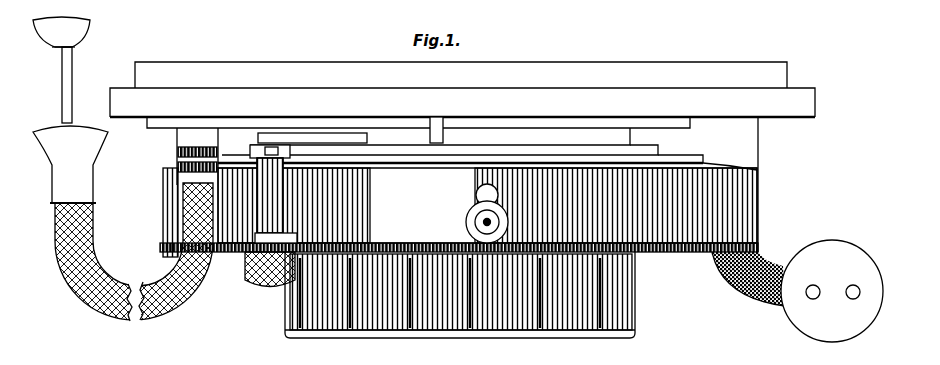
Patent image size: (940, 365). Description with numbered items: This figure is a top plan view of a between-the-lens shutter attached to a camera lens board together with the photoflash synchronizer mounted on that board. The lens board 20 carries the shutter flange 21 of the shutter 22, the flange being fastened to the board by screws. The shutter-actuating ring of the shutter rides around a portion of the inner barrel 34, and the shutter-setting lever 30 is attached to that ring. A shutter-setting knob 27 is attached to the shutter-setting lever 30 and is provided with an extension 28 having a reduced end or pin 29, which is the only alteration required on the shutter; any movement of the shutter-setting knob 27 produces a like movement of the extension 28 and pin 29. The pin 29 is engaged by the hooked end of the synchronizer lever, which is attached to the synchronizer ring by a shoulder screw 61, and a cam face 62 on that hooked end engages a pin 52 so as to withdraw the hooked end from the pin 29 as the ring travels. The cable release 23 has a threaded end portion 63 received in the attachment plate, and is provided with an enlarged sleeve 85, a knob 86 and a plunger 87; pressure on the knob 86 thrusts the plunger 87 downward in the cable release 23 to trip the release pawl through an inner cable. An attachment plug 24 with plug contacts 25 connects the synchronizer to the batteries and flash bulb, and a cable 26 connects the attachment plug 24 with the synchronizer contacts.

The lens board 20 is at (276, 82).
The shutter flange 21 is at (630, 120).
The shutter 22 is at (679, 253).
The cable release 23 is at (85, 238).
The attachment plug 24 is at (813, 324).
The plug contacts 25 is at (853, 285).
The cable 26 is at (763, 266).
The shutter-setting knob 27 is at (263, 287).
The extension 28 is at (278, 185).
The pin 29 is at (282, 147).
The shutter-setting lever 30 is at (297, 236).
The inner barrel 34 is at (626, 312).
The pin 52 is at (440, 125).
The shoulder screw 61 is at (173, 130).
The cam face 62 is at (337, 138).
The threaded end portion 63 is at (202, 147).
The enlarged sleeve 85 is at (82, 165).
The knob 86 is at (70, 36).
The plunger 87 is at (68, 73).